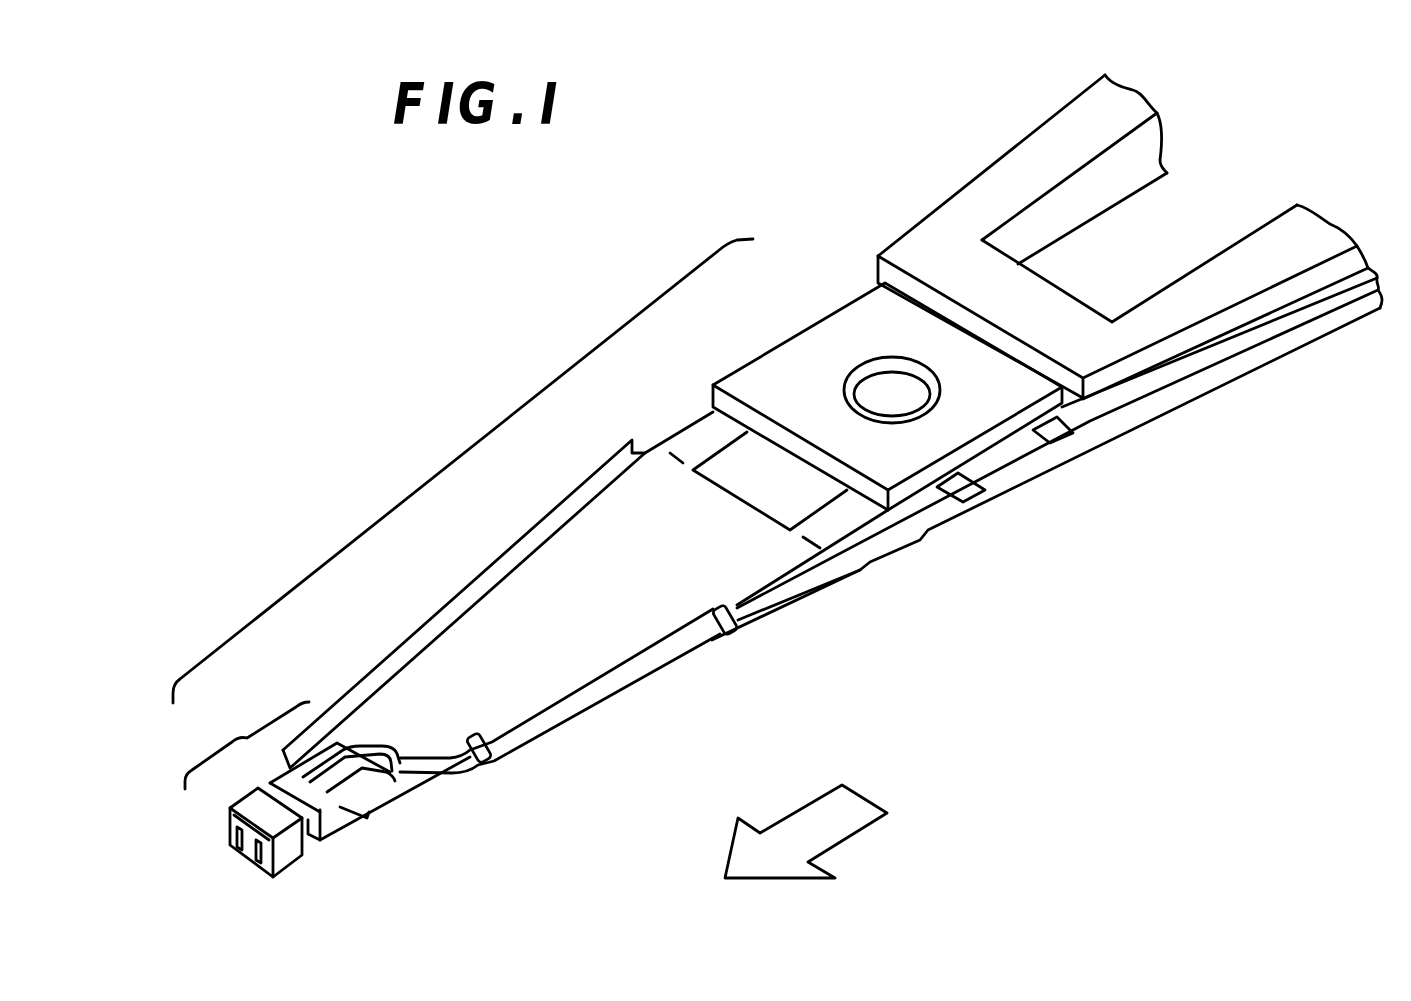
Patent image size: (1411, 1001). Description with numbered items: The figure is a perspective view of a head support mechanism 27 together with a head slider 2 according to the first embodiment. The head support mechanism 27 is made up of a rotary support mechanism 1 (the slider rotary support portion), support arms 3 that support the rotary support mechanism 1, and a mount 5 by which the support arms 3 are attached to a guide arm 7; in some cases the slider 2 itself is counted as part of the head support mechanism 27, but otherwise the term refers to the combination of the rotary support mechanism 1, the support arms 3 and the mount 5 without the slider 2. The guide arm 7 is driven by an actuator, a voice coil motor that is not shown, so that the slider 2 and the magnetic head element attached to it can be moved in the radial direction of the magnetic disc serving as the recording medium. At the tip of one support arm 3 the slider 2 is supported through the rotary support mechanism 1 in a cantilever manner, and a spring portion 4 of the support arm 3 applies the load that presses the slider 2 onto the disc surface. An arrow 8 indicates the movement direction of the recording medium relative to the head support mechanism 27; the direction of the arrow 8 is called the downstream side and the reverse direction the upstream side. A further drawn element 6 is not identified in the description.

The rotary support mechanism 1 is at (327, 768).
The slider 2 is at (237, 857).
The support arm 3 is at (597, 540).
The spring portion 4 is at (683, 440).
The mount 5 is at (823, 337).
The flat cable 6 is at (895, 545).
The guide arm 7 is at (978, 205).
The arrow 8 is at (833, 832).
The head support mechanism 27 is at (463, 471).